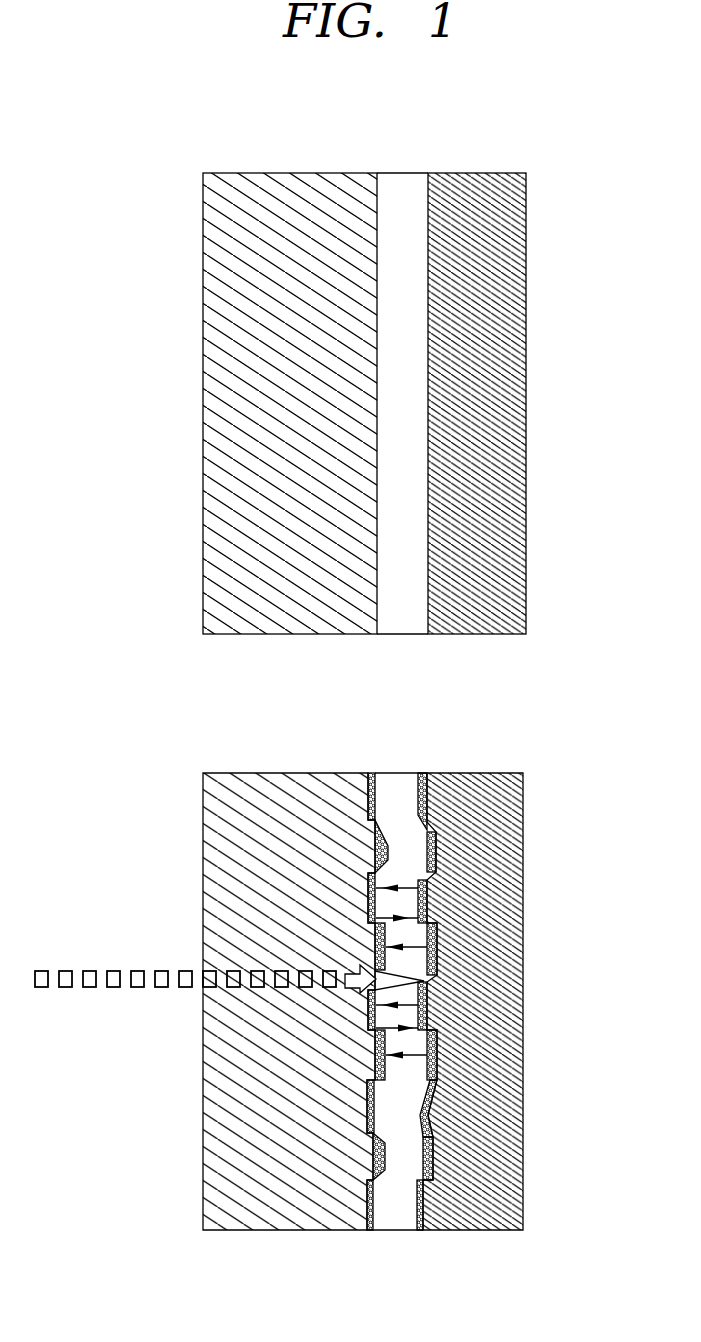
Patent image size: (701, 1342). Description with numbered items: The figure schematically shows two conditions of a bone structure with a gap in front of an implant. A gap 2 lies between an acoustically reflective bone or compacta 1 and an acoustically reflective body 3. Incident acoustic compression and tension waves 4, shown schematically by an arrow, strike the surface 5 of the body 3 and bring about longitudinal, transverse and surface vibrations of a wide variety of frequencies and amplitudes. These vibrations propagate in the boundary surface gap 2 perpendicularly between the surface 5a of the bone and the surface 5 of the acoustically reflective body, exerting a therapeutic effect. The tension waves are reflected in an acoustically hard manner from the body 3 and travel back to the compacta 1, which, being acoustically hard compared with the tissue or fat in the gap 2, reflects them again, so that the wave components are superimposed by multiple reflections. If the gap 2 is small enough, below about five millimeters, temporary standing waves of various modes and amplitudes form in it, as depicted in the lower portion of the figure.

The compacta 1 is at (285, 233).
The gap 2 is at (400, 207).
The acoustically reflective body 3 is at (480, 236).
The incident acoustic compression and tension waves 4 is at (205, 966).
The surface of body 5 is at (430, 845).
The surface of the bone 5a is at (377, 842).